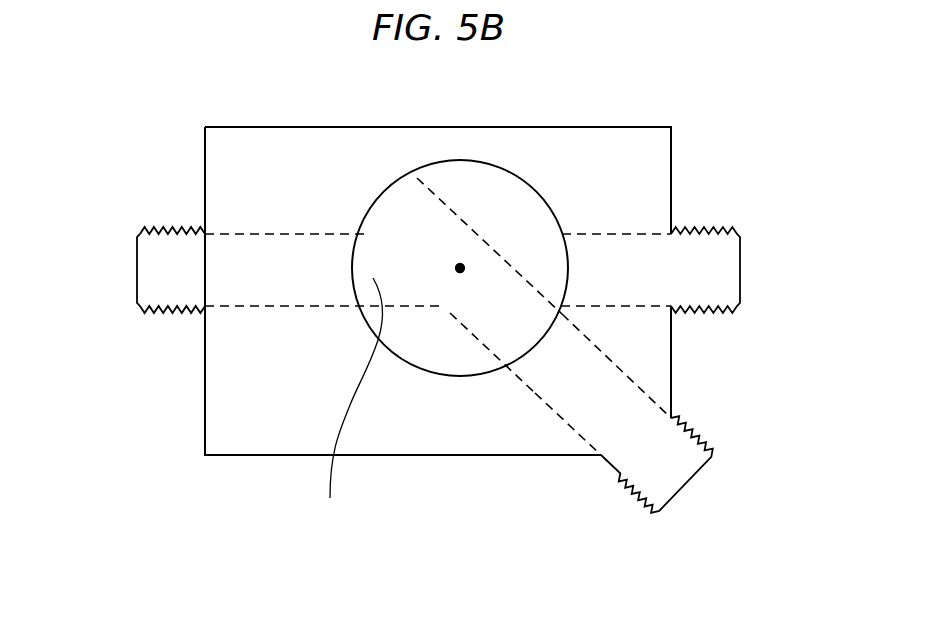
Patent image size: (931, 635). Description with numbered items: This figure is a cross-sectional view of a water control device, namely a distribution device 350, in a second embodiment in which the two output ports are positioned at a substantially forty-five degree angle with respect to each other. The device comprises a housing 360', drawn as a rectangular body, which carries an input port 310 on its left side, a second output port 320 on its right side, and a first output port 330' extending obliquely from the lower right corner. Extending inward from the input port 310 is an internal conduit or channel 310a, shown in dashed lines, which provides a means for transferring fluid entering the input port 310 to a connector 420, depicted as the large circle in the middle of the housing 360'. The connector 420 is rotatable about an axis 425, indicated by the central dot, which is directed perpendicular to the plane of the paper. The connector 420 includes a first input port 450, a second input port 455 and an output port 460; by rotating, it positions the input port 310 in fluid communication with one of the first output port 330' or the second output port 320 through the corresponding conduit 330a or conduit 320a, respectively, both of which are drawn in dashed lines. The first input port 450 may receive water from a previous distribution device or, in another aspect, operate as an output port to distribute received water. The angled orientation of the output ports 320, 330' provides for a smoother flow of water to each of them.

The distribution device 350 is at (463, 87).
The housing 360' is at (438, 265).
The connector 420 is at (545, 204).
The axis 425 is at (460, 268).
The second input port 455 is at (413, 197).
The output port 460 is at (507, 335).
The first input port 450 is at (170, 230).
The input port 310 is at (136, 270).
The internal conduit or channel 310a is at (237, 300).
The second output port 320 is at (740, 273).
The conduit 320a is at (637, 290).
The first output port 330' is at (679, 470).
The conduit 330a is at (570, 393).